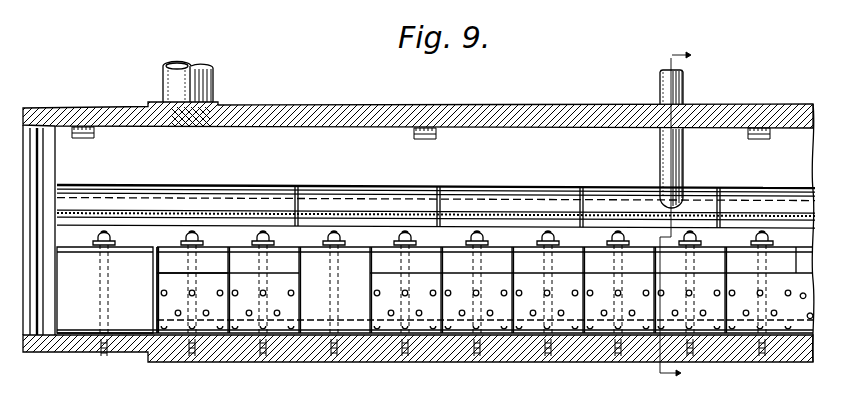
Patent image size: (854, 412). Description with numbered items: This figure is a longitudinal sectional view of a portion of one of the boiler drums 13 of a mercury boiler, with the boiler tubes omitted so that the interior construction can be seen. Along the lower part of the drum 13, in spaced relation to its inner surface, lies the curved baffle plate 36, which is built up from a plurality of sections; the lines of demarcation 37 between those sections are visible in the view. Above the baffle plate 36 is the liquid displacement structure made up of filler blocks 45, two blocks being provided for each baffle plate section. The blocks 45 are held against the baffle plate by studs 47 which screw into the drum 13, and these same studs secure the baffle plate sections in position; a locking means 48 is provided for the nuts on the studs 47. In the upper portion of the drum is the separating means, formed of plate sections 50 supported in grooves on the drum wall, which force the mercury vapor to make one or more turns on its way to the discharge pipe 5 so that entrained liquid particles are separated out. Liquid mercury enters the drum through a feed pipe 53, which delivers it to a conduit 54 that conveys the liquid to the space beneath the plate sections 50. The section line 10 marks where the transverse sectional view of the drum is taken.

The discharge pipe 5 is at (216, 96).
The boiler drum 13 is at (477, 104).
The section line 10— 10 is at (667, 216).
The baffle plate 36 is at (242, 308).
The lines of demarcation between sections 37 is at (298, 300).
The filler block 45 is at (387, 260).
The stud 47 is at (195, 271).
The locking means 48 is at (182, 243).
The plate section 50 is at (622, 212).
The feed pipe 53 is at (683, 92).
The conduit 54 is at (683, 169).